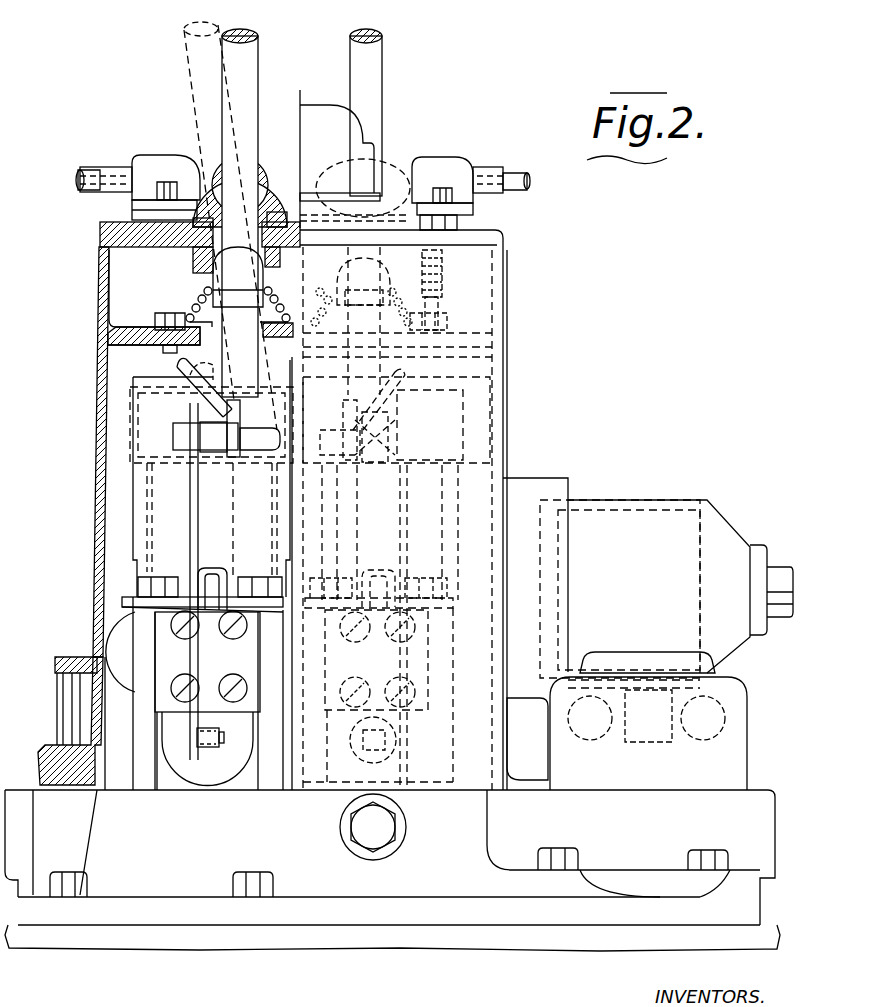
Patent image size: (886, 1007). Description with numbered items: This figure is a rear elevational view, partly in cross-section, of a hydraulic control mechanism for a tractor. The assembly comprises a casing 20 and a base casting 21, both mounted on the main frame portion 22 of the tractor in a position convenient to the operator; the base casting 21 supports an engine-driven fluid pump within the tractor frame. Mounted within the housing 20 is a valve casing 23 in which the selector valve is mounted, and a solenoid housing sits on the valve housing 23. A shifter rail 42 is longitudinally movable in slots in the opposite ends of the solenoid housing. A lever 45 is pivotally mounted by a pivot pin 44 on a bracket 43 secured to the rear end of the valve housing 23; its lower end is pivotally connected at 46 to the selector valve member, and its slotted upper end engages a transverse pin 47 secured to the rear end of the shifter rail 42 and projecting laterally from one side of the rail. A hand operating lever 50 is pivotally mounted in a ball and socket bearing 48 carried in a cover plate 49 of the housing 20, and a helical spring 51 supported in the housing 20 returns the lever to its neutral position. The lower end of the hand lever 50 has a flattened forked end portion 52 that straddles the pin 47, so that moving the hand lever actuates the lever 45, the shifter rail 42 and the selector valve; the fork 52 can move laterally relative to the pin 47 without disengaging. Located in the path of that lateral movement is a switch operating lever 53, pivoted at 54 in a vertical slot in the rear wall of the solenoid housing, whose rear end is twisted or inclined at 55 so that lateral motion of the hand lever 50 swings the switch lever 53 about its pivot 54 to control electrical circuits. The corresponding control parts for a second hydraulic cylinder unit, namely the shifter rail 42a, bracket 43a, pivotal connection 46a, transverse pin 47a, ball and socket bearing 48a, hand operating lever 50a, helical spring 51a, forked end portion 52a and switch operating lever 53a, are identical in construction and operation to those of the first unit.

The casing 20 is at (97, 378).
The base casting 21 is at (165, 870).
The main frame portion 22 is at (147, 933).
The valve casing 23 is at (167, 653).
The shifter rail 42 is at (210, 437).
The shifter rail 42a is at (400, 445).
The bracket 43 is at (211, 567).
The bracket 43a is at (378, 568).
The pivot pin 44 is at (213, 608).
The lever 45 is at (190, 513).
The pivotal connection 46 is at (210, 750).
The pivotal connection 46a is at (356, 752).
The transverse pin 47 is at (250, 452).
The transverse pin 47a is at (345, 532).
The ball and socket bearing 48 is at (212, 272).
The ball and socket bearing 48a is at (345, 290).
The cover plate 49 is at (100, 230).
The hand operating lever 50 is at (247, 57).
The hand operating lever 50a is at (368, 65).
The helical spring 51 is at (205, 302).
The helical spring 51a is at (430, 295).
The forked end portion 52 is at (232, 460).
The forked end portion 52a is at (365, 475).
The switch operating lever 53 is at (185, 370).
The switch operating lever 53a is at (408, 372).
The pivot 54 is at (198, 366).
The twisted end 55 is at (198, 402).